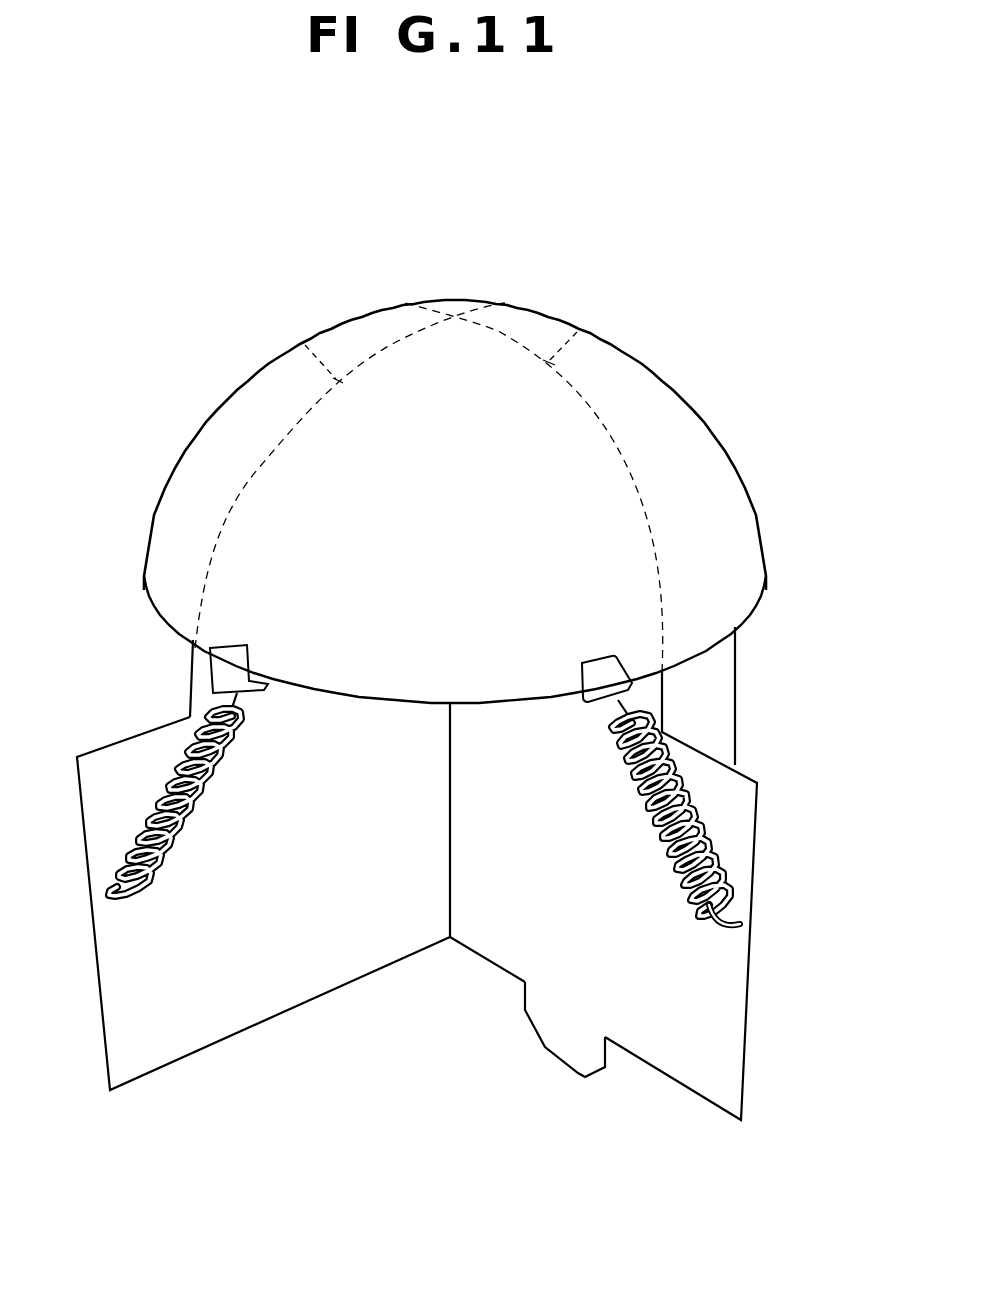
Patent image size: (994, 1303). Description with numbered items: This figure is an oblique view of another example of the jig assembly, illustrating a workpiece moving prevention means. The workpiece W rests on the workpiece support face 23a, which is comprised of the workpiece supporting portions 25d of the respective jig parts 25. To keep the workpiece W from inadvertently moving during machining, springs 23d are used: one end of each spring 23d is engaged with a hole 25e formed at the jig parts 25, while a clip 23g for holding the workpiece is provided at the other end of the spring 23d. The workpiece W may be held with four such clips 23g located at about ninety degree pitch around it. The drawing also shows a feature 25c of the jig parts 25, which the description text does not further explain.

The workpiece (dome-shaped panel) W is at (690, 407).
The dome inner surface 23a is at (714, 512).
The guide lines on workpiece 25d is at (302, 343).
The attachment tabs 23g is at (232, 656).
The coil springs 23d is at (193, 830).
The support plates 25 is at (737, 785).
The spring hook end 25e is at (741, 923).
The notch in support plate 25c is at (582, 1063).